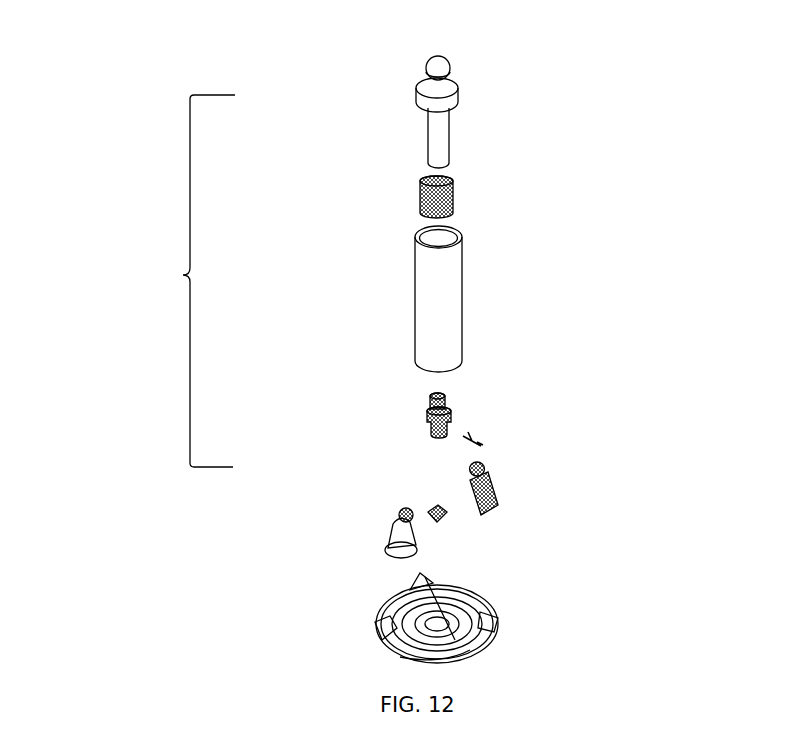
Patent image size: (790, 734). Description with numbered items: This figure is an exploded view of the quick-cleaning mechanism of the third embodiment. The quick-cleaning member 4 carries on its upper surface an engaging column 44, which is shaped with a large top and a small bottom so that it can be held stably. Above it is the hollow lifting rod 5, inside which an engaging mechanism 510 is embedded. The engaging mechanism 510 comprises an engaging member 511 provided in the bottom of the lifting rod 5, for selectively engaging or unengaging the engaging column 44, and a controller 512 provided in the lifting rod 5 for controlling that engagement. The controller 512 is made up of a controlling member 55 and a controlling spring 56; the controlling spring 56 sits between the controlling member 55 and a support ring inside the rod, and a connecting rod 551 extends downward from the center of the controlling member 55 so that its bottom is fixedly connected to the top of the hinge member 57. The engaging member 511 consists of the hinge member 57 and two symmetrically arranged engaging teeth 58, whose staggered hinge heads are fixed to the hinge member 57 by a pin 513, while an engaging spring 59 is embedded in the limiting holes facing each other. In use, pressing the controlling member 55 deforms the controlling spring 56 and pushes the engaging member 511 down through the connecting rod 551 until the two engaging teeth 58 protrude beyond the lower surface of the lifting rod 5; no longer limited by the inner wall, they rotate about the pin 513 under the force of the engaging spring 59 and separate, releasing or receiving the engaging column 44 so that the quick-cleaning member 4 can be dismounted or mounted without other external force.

The quick-cleaning member 4 is at (378, 625).
The engaging column 44 is at (597, 665).
The lifting rod 5 is at (435, 298).
The engaging mechanism 510 is at (183, 276).
The engaging member 511 is at (387, 535).
The controller 512 is at (410, 148).
The pin 513 is at (471, 437).
The controlling member 55 is at (424, 76).
The connecting rod 551 is at (437, 143).
The controlling spring 56 is at (417, 195).
The hinge member 57 is at (420, 408).
The engaging tooth 58 is at (465, 480).
The engaging spring 59 is at (447, 518).